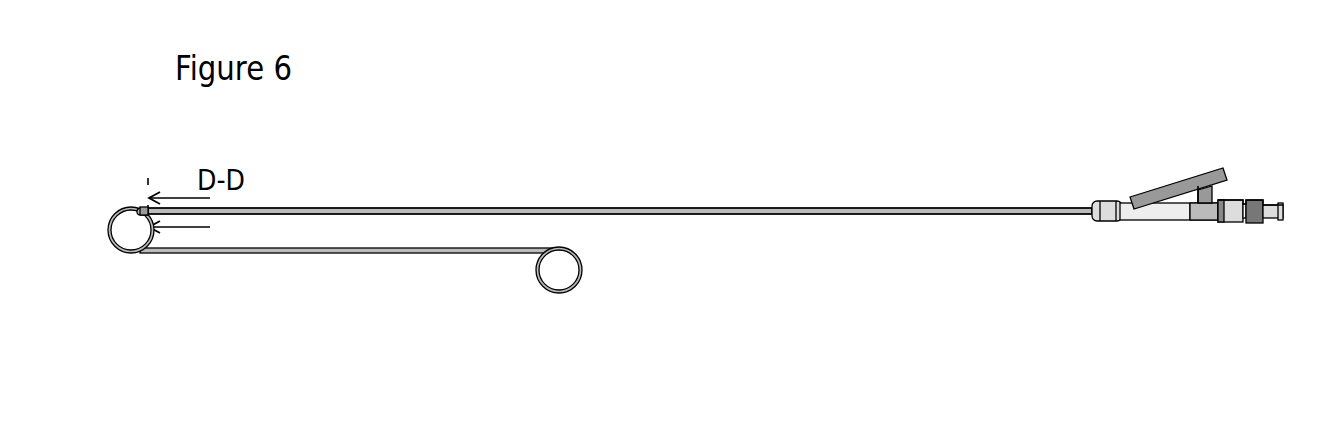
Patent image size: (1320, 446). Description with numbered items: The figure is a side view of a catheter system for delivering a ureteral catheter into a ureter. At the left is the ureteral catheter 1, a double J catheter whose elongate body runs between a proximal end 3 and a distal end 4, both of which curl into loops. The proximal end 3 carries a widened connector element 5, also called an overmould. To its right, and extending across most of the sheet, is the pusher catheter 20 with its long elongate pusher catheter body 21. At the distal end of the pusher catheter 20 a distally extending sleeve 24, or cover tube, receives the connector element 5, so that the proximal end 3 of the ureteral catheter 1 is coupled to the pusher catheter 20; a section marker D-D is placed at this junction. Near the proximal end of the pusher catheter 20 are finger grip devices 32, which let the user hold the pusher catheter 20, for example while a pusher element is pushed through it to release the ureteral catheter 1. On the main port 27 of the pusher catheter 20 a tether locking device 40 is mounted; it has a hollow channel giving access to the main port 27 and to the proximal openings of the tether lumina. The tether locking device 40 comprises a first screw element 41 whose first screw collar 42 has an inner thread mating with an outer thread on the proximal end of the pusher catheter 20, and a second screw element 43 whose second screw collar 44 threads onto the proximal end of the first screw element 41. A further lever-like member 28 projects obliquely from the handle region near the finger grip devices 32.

The ureteral catheter 1 is at (287, 252).
The proximal end 3 is at (126, 268).
The distal end 4 is at (561, 308).
The connector element 5 is at (137, 210).
The pusher catheter 20 is at (767, 186).
The elongate pusher catheter body 21 is at (675, 209).
The sleeve 24 is at (141, 208).
The main port 27 is at (1218, 210).
The lever 28 is at (1223, 177).
The finger grip devices 32 is at (1137, 215).
The tether locking device 40 is at (1261, 172).
The first screw element 41 is at (1246, 213).
The first screw collar 42 is at (1227, 217).
The second screw element 43 is at (1270, 218).
The second screw collar 44 is at (1252, 203).